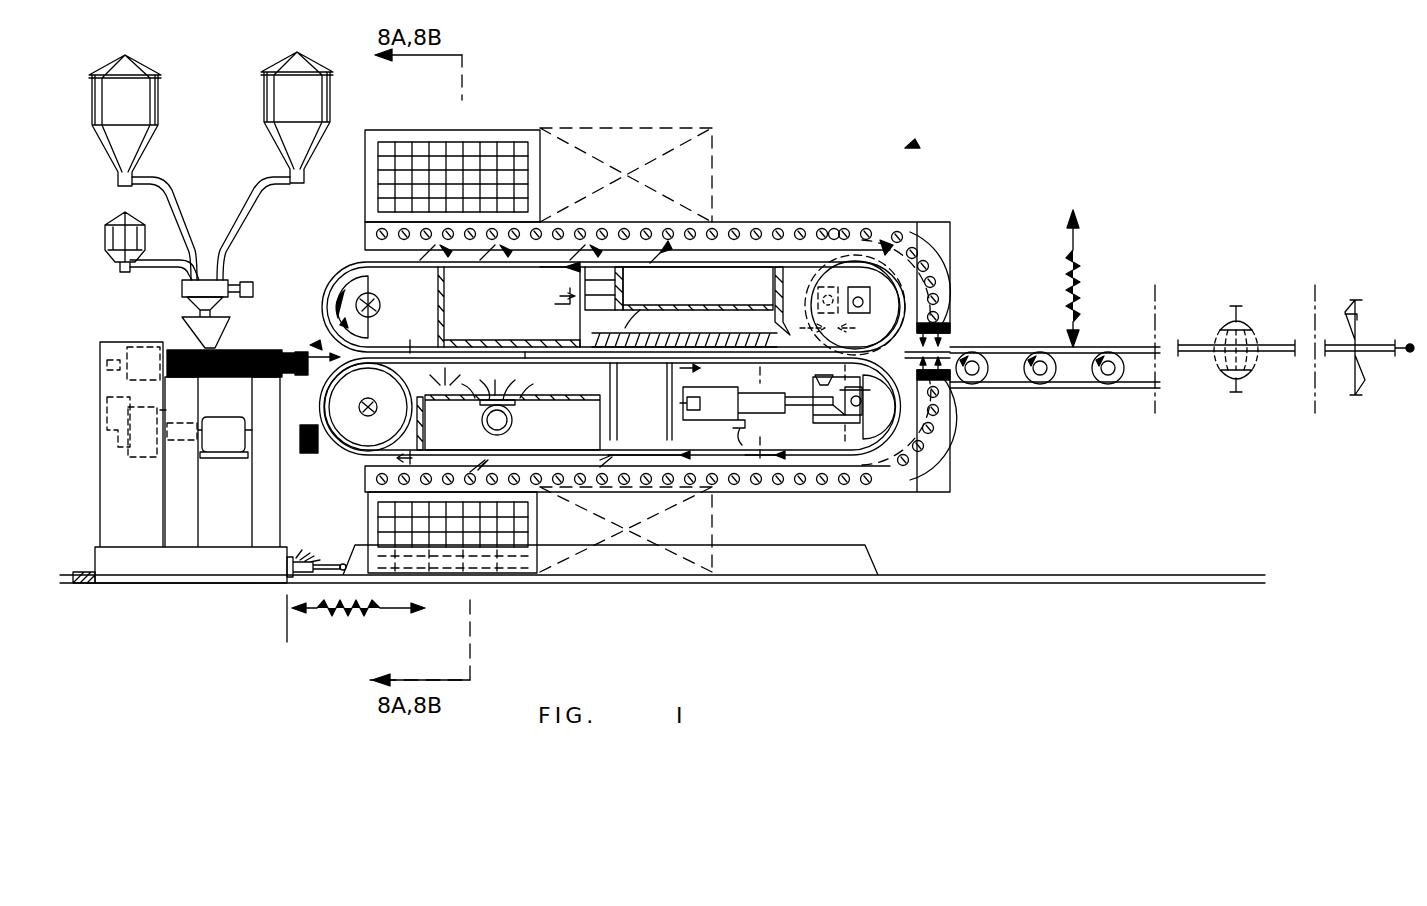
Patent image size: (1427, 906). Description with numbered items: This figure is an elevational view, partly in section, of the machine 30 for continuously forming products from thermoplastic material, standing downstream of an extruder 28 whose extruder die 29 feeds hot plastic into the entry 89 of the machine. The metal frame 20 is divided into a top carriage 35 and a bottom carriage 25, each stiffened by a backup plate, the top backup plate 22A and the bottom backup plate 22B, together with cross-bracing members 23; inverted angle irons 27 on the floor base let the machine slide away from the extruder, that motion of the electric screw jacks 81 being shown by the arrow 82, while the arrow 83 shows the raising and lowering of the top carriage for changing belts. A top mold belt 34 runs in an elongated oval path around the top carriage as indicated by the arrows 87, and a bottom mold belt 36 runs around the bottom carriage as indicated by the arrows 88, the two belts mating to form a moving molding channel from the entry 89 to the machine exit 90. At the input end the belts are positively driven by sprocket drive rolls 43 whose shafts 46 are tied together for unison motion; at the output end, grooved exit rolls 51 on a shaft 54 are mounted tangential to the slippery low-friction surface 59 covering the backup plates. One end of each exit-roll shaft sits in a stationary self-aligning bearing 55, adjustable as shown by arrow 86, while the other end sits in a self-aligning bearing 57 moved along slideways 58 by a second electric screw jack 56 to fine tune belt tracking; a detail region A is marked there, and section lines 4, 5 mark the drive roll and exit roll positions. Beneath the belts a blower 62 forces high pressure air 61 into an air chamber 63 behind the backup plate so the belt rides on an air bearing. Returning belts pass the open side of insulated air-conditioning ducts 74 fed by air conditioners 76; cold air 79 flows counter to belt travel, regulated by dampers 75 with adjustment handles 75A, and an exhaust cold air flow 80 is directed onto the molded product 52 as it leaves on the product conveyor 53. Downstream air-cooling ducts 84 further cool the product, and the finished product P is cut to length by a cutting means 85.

The section line 4 is at (404, 351).
The section line 5 is at (752, 365).
The metal frame 20 is at (570, 296).
The top backup plate 22A is at (698, 295).
The bottom backup plate 22B is at (450, 352).
The cross-bracing members 23 is at (636, 290).
The bottom carriage 25 is at (641, 401).
The inverted angle irons 27 is at (790, 575).
The extruder 28 is at (150, 346).
The extruder die 29 is at (310, 345).
The machine 30 is at (905, 148).
The top mold belt 34 is at (333, 290).
The top carriage 35 is at (509, 307).
The bottom mold belt 36 is at (360, 452).
The sprocket drive rolls 43 is at (352, 285).
The shafts 46 is at (378, 300).
The grooved exit rolls 51 is at (935, 262).
The molded product 52 is at (1000, 348).
The product conveyor 53 is at (1048, 385).
The shaft 54 is at (948, 348).
The self-aligning bearing 55 is at (836, 222).
The second electric screw jack 56 is at (730, 392).
The self-aligning bearing 57 is at (865, 295).
The slideways 58 is at (815, 385).
The slippery low coefficient of friction surface 59 is at (515, 355).
The high pressure air 61 is at (440, 398).
The blower 62 is at (510, 432).
The air chamber 63 is at (622, 318).
The air-conditioning ducts 74 is at (735, 222).
The dampers 75 is at (794, 222).
The adjustment handles 75A is at (858, 222).
The air conditioners 76 is at (432, 138).
The cold air 79 is at (552, 250).
The exhaust cold air flow 80 is at (935, 320).
The electric screw jacks 81 is at (292, 575).
The arrow 82 is at (368, 612).
The arrow 83 is at (1078, 285).
The downstream air-cooling ducts 84 is at (1225, 322).
The cutting means 85 is at (1358, 318).
The arrow 86 is at (775, 282).
The arrows 87 is at (340, 325).
The arrows 88 is at (350, 428).
The entry 89 is at (318, 365).
The machine exit 90 is at (925, 298).
The detail A is at (828, 405).
The finished product P is at (1360, 345).